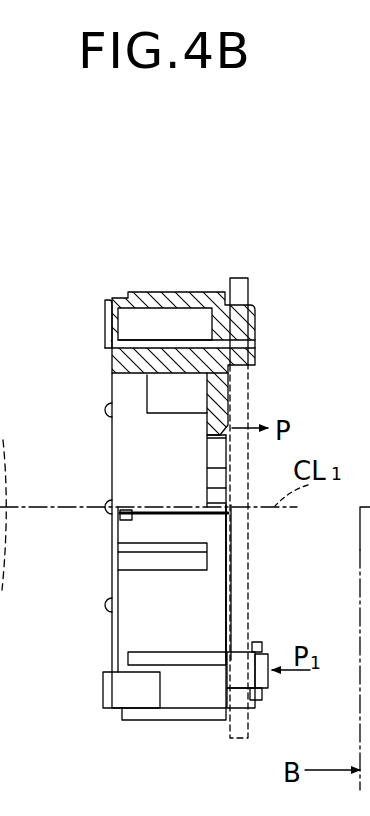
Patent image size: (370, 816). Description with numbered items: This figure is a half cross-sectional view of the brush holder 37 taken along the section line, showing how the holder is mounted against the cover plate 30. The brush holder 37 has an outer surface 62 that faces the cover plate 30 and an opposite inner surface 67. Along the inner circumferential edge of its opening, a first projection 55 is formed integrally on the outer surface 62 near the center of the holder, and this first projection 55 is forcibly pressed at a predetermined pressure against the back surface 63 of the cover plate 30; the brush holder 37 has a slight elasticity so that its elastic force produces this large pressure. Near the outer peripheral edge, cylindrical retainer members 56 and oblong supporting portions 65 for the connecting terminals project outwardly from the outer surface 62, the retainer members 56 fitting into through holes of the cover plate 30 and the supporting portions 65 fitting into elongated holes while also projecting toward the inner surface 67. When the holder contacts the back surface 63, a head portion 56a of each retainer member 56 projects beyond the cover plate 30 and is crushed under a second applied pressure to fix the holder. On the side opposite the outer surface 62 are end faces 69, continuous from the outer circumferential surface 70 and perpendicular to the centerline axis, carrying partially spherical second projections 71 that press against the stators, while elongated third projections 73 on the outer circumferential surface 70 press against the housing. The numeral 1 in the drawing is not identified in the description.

The cut-off numeral 1 is at (10, 341).
The cover plate 30 is at (249, 291).
The brush holder 37 is at (203, 258).
The first projection 55 is at (249, 418).
The retainer member 56 is at (246, 650).
The head portion 56a is at (257, 642).
The outer surface 62 is at (229, 380).
The back surface 63 is at (223, 608).
The supporting portion 65 is at (257, 318).
The inner surface 67 is at (205, 393).
The end face 69 is at (0, 432).
The outer circumferential surface 70 is at (188, 695).
The second projection 71 is at (106, 408).
The third projection 73 is at (148, 650).